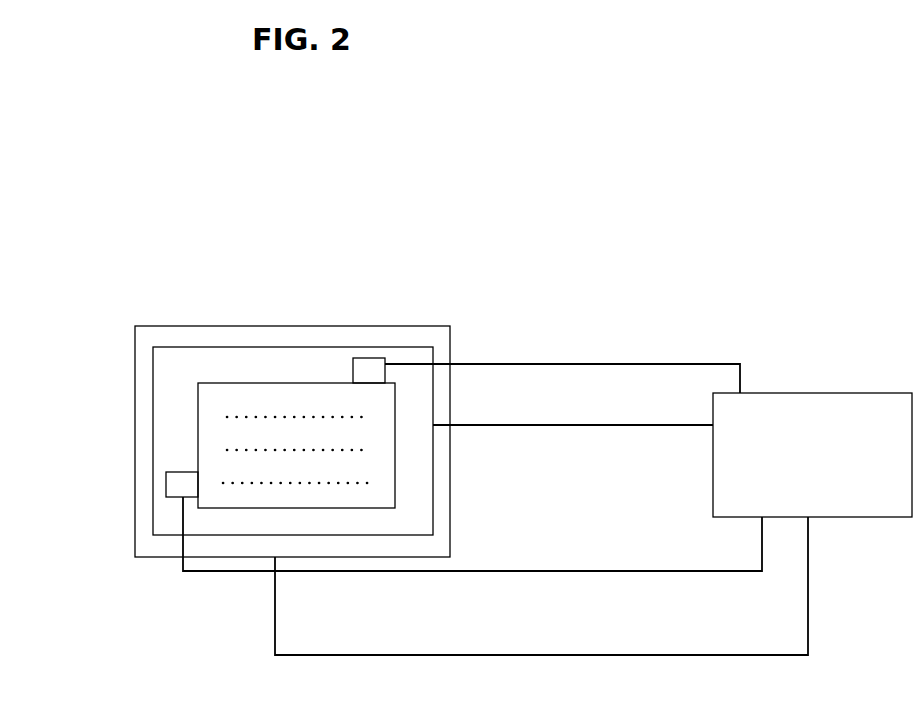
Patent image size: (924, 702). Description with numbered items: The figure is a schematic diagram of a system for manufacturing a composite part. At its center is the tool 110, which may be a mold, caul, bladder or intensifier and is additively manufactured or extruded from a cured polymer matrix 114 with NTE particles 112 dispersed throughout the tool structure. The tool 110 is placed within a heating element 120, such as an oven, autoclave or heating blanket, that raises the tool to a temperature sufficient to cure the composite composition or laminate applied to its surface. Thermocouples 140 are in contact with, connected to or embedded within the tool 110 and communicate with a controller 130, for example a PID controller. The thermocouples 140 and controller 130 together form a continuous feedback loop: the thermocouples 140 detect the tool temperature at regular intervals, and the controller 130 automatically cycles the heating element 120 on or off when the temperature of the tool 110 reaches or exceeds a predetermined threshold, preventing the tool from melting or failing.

The tool 110 is at (248, 383).
The NTE particles 112 is at (362, 483).
The cured polymer matrix 114 is at (295, 398).
The heating element 120 is at (143, 409).
The controller 130 is at (812, 455).
The thermocouples 140 is at (373, 358).